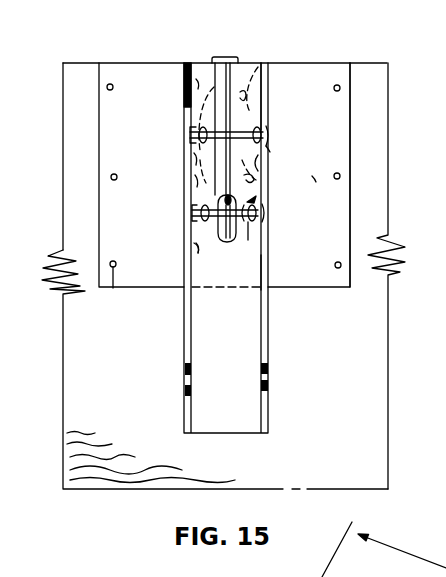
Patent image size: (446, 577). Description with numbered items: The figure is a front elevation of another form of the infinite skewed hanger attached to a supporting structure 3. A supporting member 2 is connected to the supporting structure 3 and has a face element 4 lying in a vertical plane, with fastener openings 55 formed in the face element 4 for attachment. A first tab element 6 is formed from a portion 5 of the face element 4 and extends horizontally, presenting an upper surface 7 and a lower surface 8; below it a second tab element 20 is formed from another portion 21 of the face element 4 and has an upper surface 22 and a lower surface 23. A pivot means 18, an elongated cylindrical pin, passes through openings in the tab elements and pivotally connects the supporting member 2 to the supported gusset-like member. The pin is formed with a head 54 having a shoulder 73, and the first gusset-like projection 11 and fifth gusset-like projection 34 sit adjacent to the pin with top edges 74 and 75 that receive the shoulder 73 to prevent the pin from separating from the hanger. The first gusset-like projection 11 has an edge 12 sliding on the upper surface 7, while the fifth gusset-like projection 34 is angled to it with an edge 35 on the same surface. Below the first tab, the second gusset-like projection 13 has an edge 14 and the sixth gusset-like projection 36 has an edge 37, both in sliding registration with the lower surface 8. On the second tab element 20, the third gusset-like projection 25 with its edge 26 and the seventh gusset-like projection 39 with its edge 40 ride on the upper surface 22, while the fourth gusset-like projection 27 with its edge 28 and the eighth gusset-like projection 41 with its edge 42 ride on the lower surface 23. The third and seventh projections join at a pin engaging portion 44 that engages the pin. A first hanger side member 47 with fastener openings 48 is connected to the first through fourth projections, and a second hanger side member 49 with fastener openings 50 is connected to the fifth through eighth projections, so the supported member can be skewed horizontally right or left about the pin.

The supporting structure 3 is at (85, 63).
The supporting member 2 is at (153, 63).
The face element 4 is at (318, 85).
The top edge 74 is at (195, 63).
The shoulder 73 is at (212, 62).
The head 54 is at (220, 57).
The top edge 75 is at (250, 62).
The portion of the face element 5 is at (253, 73).
The upper surface 7 is at (244, 127).
The fifth gusset-like projection 34 is at (250, 127).
The first tab element 6 is at (257, 131).
The edge 12 is at (190, 148).
The edge 14 is at (192, 152).
The edge 35 is at (268, 131).
The lower surface 8 is at (272, 152).
The first gusset-like projection 11 is at (197, 83).
The second gusset-like projection 13 is at (192, 158).
The third gusset-like projection 25 is at (192, 180).
The portion of the face element 21 is at (316, 173).
The sixth gusset-like projection 36 is at (266, 163).
The seventh gusset-like projection 39 is at (256, 198).
The second tab element 20 is at (262, 218).
The edge 26 is at (188, 227).
The edge 28 is at (190, 240).
The fourth gusset-like projection 27 is at (195, 249).
The upper surface 22 is at (271, 207).
The edge 37 is at (262, 225).
The lower surface 23 is at (254, 227).
The edge 40 is at (246, 233).
The pivot means 18 is at (229, 258).
The edge 42 is at (201, 252).
The eighth gusset-like projection 41 is at (268, 272).
The fastener openings 55 is at (112, 288).
The fastener openings 48 is at (185, 368).
The first hanger side member 47 is at (186, 386).
The fastener openings 50 is at (268, 368).
The second hanger side member 49 is at (268, 381).
The pin engaging portion 44 is at (407, 276).